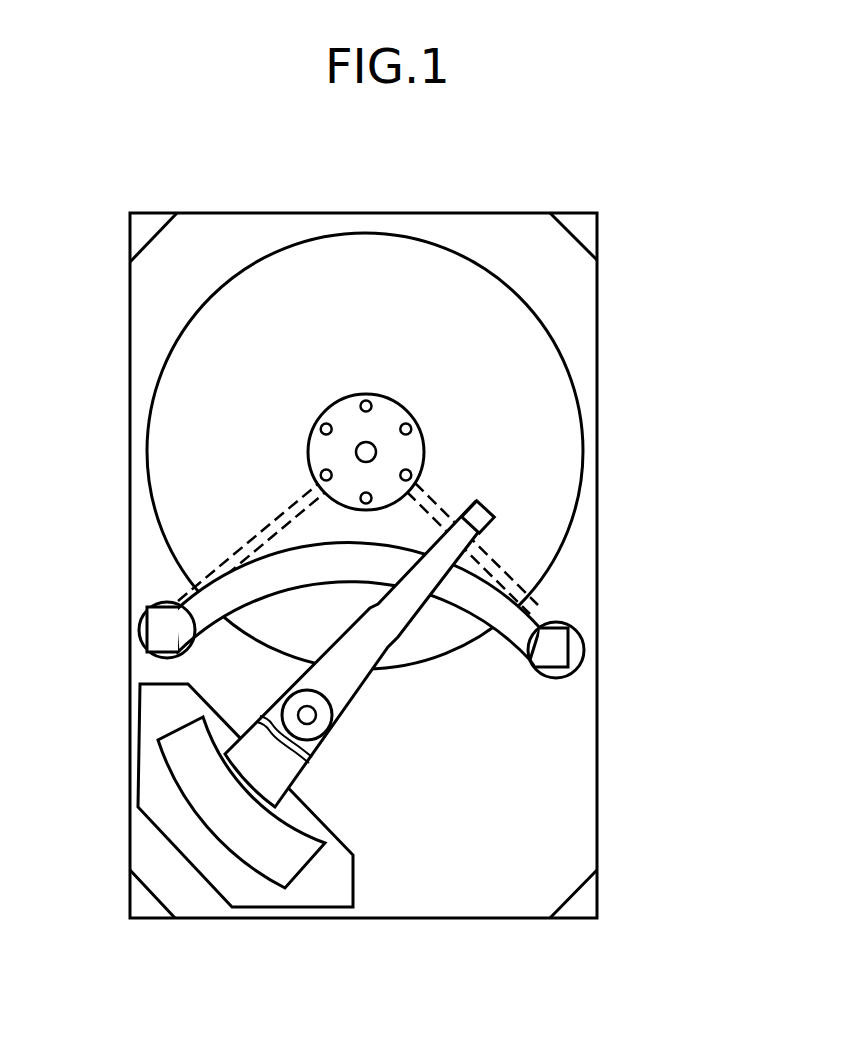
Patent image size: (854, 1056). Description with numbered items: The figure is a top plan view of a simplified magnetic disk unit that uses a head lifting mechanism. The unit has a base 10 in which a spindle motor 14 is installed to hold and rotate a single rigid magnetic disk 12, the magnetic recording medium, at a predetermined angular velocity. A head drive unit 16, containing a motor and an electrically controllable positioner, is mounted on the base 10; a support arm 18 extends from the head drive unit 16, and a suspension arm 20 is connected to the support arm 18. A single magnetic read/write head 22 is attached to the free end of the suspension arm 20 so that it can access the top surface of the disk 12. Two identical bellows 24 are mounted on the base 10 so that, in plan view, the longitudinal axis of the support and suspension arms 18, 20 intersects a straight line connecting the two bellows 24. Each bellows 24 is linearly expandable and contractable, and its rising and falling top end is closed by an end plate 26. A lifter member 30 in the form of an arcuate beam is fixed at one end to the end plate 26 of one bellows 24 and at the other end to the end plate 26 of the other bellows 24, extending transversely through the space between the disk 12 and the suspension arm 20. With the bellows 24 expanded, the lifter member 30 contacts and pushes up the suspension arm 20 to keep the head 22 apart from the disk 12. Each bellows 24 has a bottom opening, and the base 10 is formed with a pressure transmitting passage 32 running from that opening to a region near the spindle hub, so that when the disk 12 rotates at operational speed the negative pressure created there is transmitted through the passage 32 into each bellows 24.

The base 10 is at (580, 363).
The rigid magnetic disk 12 is at (472, 293).
The spindle motor 14 is at (372, 393).
The head drive unit 16 is at (182, 757).
The support arm 18 is at (342, 693).
The suspension arm 20 is at (490, 553).
The magnetic read/write head 22 is at (493, 506).
The bellows 24 is at (160, 606).
The end plate 26 is at (143, 633).
The lifter member 30 is at (520, 627).
The pressure transmitting passage 32 is at (235, 552).